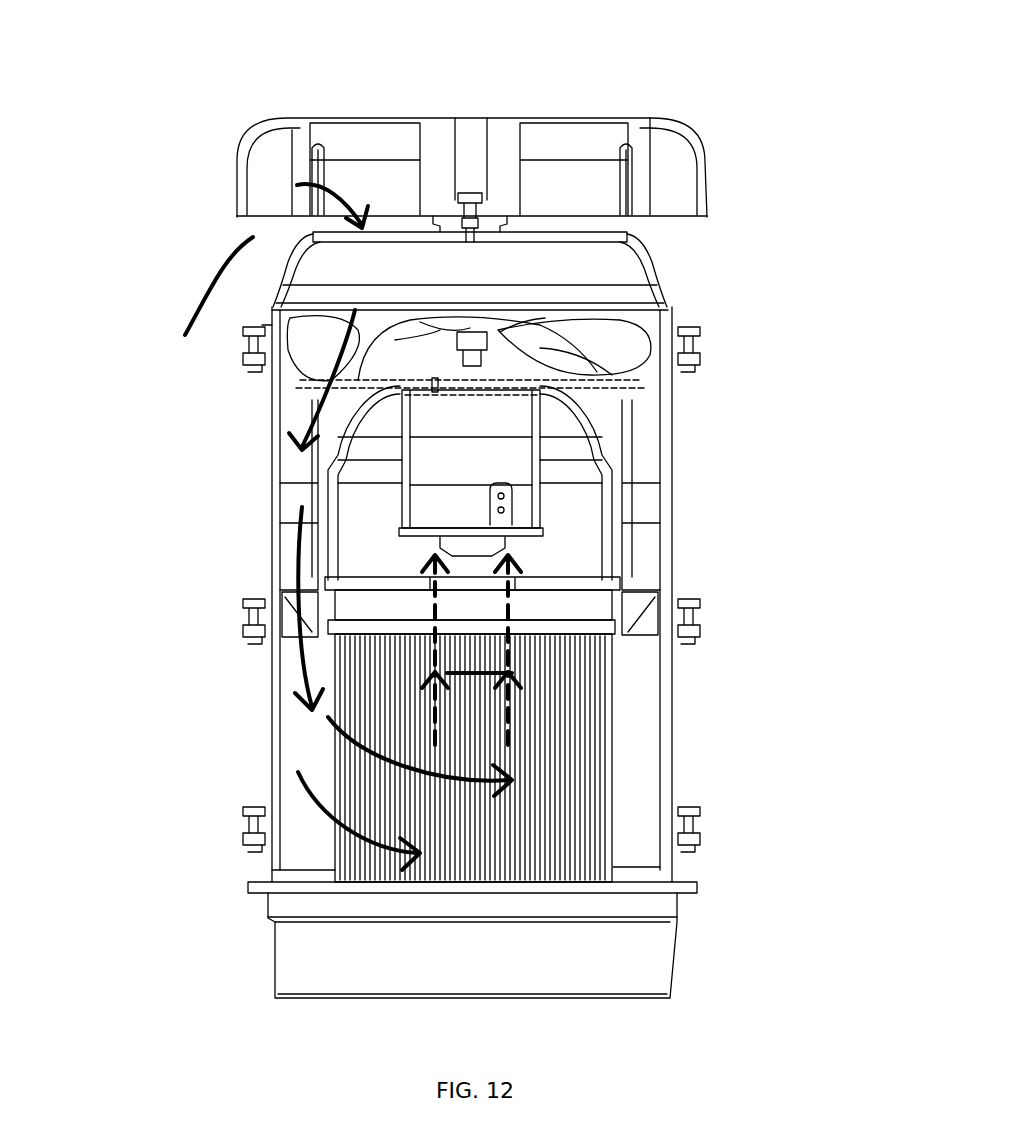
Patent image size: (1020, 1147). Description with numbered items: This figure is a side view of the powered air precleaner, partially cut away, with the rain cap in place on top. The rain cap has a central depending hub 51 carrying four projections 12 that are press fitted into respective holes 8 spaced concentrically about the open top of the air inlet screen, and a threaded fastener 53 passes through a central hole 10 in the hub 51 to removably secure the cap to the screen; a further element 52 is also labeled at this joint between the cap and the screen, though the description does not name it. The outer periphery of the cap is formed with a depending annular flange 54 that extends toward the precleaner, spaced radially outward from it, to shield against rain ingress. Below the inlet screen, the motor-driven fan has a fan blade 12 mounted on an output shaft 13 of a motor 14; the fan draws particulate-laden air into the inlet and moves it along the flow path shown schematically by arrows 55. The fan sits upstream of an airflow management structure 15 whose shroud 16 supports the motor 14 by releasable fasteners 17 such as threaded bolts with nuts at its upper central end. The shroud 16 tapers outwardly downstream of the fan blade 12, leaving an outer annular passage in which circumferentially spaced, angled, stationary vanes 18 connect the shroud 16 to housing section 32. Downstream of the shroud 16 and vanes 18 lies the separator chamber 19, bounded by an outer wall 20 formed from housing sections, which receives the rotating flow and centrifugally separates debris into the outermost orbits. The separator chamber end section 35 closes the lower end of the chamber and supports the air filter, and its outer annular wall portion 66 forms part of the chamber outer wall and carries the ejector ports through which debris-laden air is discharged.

The holes 8 is at (510, 225).
The central hole 10 is at (480, 132).
The fan blade 12 is at (630, 365).
The output shaft 13 is at (470, 362).
The motor 14 is at (403, 490).
The airflow management structure 15 is at (320, 557).
The shroud 16 is at (605, 442).
The releasable fasteners 17 is at (507, 368).
The stationary vanes 18 is at (293, 502).
The separator chamber 19 is at (643, 770).
The outer wall 20 is at (663, 757).
The housing section 32 is at (665, 468).
The separator chamber end section 35 is at (647, 960).
The central depending hub 51 is at (503, 183).
The gasket 52 is at (508, 217).
The threaded fastener 53 is at (472, 192).
The depending annular flange 54 is at (237, 193).
The arrows 55 is at (317, 393).
The outer annular wall portion 66 is at (270, 958).